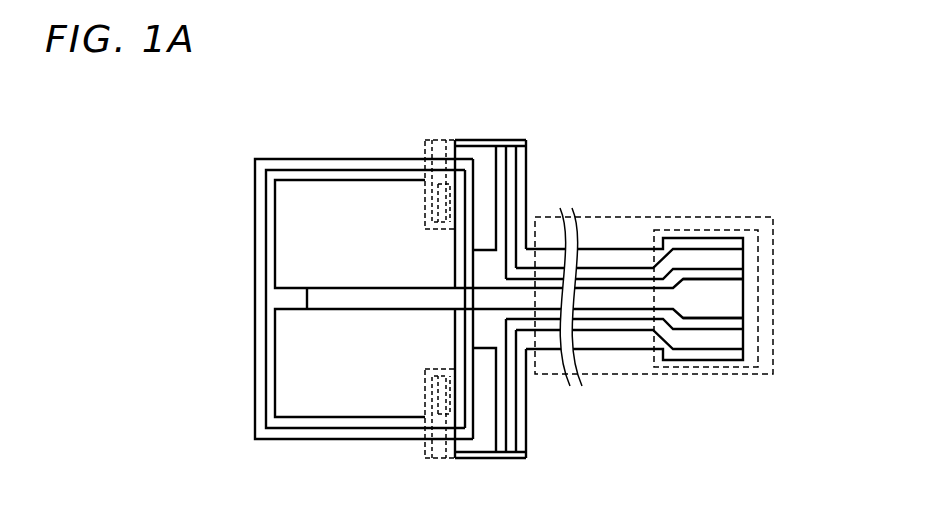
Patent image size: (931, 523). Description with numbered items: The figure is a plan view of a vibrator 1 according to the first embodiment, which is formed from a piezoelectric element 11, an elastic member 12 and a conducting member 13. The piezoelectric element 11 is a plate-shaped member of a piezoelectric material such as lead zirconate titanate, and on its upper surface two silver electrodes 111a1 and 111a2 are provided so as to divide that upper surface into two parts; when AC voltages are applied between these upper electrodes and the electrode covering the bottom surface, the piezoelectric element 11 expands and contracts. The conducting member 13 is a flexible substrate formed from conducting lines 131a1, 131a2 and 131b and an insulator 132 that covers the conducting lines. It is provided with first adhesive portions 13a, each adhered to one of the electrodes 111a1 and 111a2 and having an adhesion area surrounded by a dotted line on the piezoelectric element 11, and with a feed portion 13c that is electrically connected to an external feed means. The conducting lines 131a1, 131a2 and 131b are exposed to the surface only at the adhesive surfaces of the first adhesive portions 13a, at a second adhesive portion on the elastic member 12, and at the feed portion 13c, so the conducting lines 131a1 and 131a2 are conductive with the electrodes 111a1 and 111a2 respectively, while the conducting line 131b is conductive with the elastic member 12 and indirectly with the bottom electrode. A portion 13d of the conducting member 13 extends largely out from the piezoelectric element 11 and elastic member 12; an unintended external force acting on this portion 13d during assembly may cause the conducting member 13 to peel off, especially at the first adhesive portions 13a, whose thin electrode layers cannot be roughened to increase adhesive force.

The vibrator 1 is at (240, 146).
The piezoelectric element 11 is at (266, 233).
The elastic member 12 is at (255, 388).
The electrode 111a1 is at (360, 180).
The electrode 111a2 is at (313, 418).
The conducting member 13 is at (610, 250).
The first adhesive portion 13a is at (440, 370).
The feed portion 13c is at (735, 217).
The portion 13d is at (755, 375).
The insulator 132 is at (627, 262).
The conducting line 131a1 is at (738, 258).
The conducting line 131b is at (738, 298).
The conducting line 131a2 is at (738, 338).